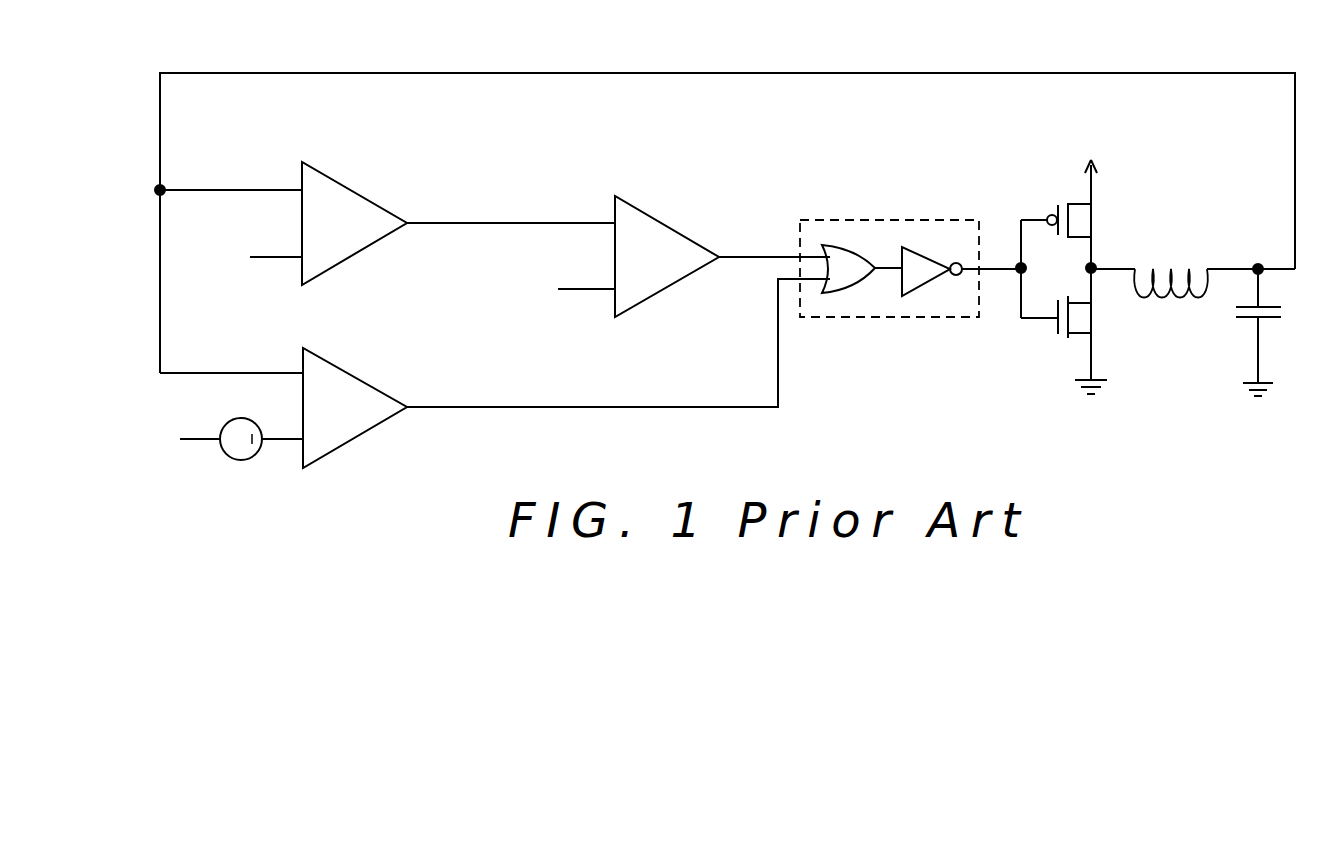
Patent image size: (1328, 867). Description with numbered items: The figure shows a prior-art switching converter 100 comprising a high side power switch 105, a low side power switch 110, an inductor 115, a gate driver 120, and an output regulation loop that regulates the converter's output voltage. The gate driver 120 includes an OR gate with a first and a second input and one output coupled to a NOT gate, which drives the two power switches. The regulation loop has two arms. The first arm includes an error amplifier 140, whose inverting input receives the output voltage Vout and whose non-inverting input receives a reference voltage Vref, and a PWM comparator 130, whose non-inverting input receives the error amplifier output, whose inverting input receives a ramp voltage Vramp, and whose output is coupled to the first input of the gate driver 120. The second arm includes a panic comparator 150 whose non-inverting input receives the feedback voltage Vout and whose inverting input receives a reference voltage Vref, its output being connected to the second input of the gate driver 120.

The switching converter 100 is at (263, 37).
The high side power switch 105 is at (1053, 212).
The low side power switch 110 is at (1052, 330).
The inductor 115 is at (1178, 268).
The gate driver 120 is at (915, 219).
The PWM comparator 130 is at (690, 234).
The error amplifier 140 is at (373, 204).
The panic comparator 150 is at (375, 387).